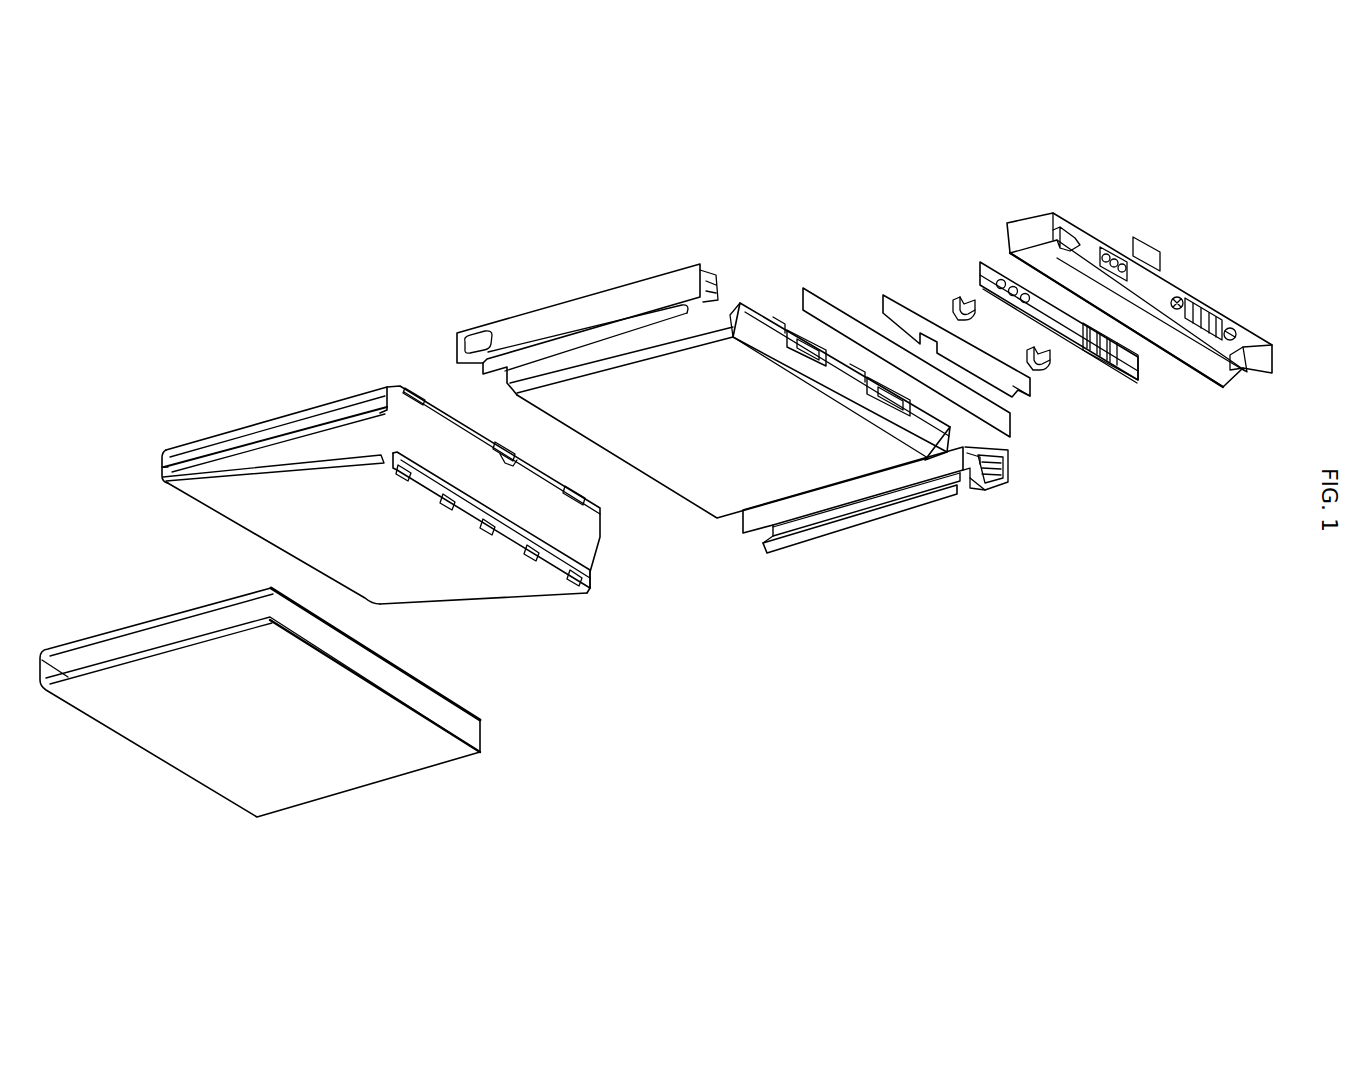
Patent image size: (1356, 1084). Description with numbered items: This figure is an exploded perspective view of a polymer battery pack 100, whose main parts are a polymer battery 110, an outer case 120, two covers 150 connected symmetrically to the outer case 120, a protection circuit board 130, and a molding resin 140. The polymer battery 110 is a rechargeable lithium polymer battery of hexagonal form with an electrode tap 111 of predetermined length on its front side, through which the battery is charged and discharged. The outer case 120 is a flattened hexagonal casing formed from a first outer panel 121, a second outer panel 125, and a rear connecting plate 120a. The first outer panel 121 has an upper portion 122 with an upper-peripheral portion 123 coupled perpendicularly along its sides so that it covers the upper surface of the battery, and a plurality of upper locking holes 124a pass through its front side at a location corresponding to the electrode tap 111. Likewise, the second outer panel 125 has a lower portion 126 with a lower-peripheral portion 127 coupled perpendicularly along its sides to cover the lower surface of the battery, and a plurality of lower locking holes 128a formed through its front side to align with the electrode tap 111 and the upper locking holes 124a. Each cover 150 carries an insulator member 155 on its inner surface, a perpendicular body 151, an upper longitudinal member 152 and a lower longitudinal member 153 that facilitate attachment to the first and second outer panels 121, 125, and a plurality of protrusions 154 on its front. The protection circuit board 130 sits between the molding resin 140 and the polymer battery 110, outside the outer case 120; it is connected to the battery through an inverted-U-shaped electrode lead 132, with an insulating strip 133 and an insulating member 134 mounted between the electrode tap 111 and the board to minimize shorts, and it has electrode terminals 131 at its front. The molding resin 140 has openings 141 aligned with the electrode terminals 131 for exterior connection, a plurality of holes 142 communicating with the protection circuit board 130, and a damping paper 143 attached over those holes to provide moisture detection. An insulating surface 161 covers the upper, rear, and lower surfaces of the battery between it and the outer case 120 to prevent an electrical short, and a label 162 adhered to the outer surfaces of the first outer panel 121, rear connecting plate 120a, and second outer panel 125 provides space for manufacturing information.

The polymer battery pack 100 is at (1100, 652).
The polymer battery 110 is at (758, 304).
The electrode tap 111 is at (810, 343).
The outer case 120 is at (193, 347).
The rear connecting plate 120a is at (157, 458).
The first outer panel 121 is at (263, 463).
The upper portion 122 is at (387, 577).
The upper-peripheral portion 123 is at (210, 485).
The upper locking holes 124a is at (530, 553).
The second outer panel 125 is at (277, 423).
The lower portion 126 is at (433, 430).
The lower-peripheral portion 127 is at (370, 400).
The lower locking holes 128a is at (510, 460).
The protection circuit board 130 is at (1135, 392).
The electrode terminal 131 is at (1117, 353).
The electrode lead 132 is at (1047, 367).
The insulating strip 133 is at (1012, 427).
The insulating member 134 is at (1033, 388).
The molding resin 140 is at (1030, 230).
The openings 141 is at (1220, 323).
The holes 142 is at (1110, 250).
The damping paper 143 is at (1147, 251).
The cover 150 is at (945, 588).
The perpendicular body 151 is at (993, 486).
The upper longitudinal member 152 is at (943, 494).
The lower longitudinal member 153 is at (987, 482).
The protrusions 154 is at (1008, 487).
The insulator member 155 is at (900, 480).
The insulating surface 161 is at (743, 434).
The label 162 is at (170, 753).